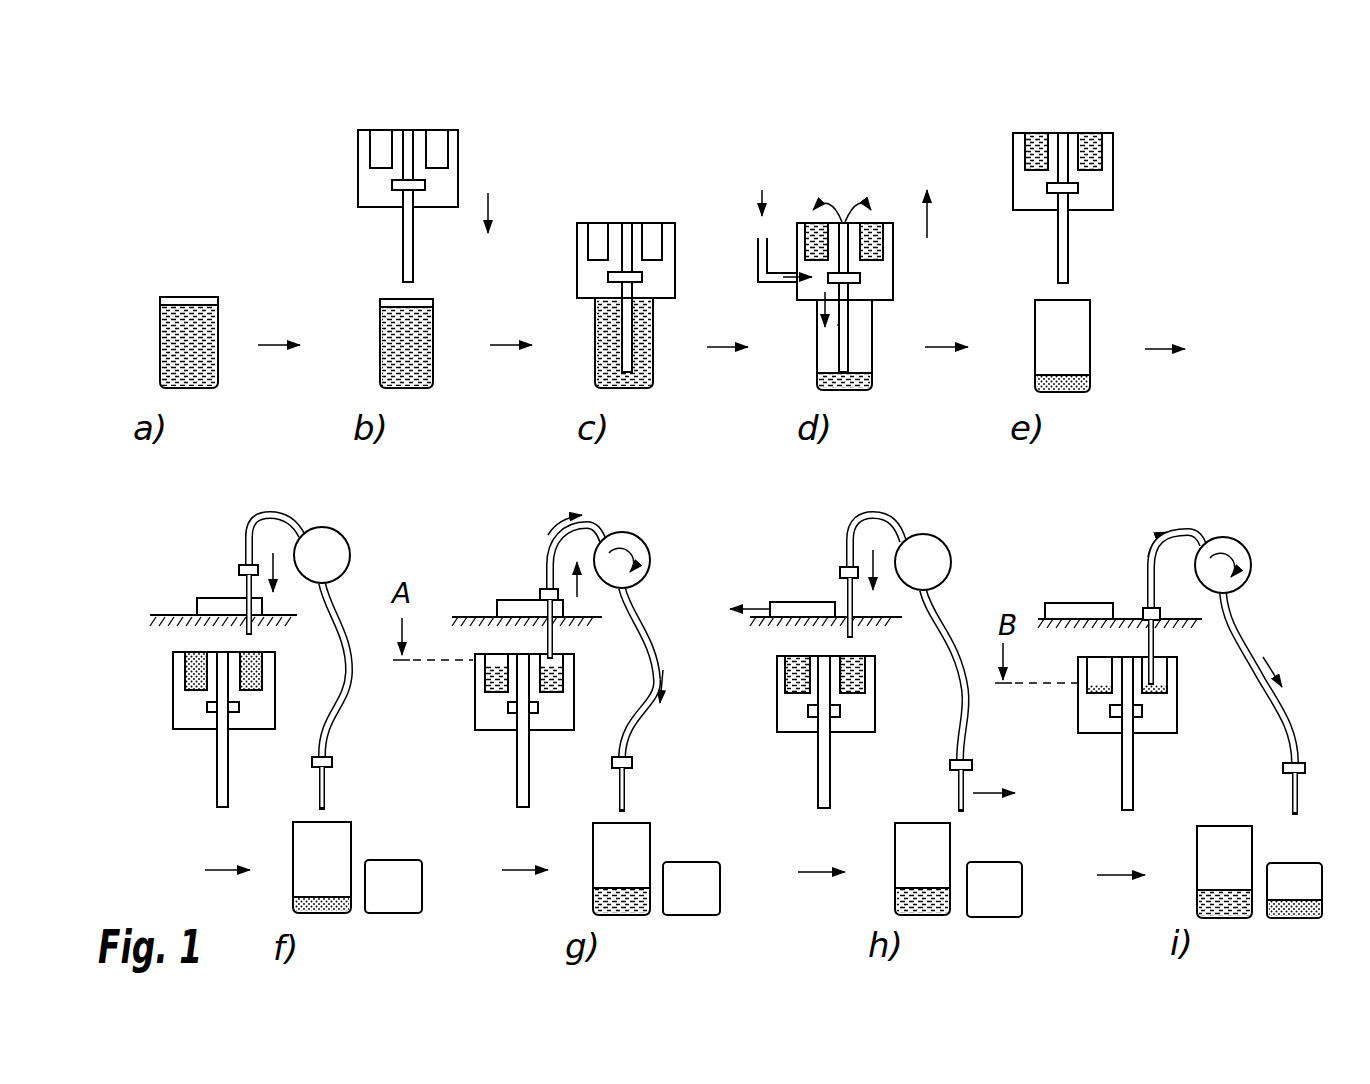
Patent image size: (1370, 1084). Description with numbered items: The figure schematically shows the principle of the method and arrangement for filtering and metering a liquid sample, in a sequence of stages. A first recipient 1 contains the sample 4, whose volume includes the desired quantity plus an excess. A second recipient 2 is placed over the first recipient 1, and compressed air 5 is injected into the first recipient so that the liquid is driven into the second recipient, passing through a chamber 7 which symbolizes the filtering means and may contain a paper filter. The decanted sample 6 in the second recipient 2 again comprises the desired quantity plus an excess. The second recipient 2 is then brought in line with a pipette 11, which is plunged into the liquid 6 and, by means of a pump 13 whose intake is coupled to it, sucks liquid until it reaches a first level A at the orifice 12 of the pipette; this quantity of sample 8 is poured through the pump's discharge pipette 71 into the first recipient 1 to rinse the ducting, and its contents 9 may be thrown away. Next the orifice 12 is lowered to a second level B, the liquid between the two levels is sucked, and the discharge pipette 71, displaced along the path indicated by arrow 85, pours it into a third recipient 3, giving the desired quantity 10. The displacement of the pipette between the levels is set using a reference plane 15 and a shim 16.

The first recipient 1 is at (674, 607).
The second recipient 2 is at (639, 423).
The third recipient 3 is at (867, 909).
The sample 4 is at (433, 347).
The compressed air 5 is at (785, 215).
The decanted sample 6 is at (647, 385).
The chamber 7 is at (701, 470).
The quantity of sample 8 is at (796, 657).
The contents 9 is at (624, 924).
The desired quantity 10 is at (1285, 929).
The pipette 11 is at (687, 600).
The orifice 12 is at (476, 614).
The pump 13 is at (809, 541).
The reference plane 15 is at (676, 581).
The shim 16 is at (657, 576).
The pipette 71 is at (841, 699).
The arrow 85 is at (988, 792).